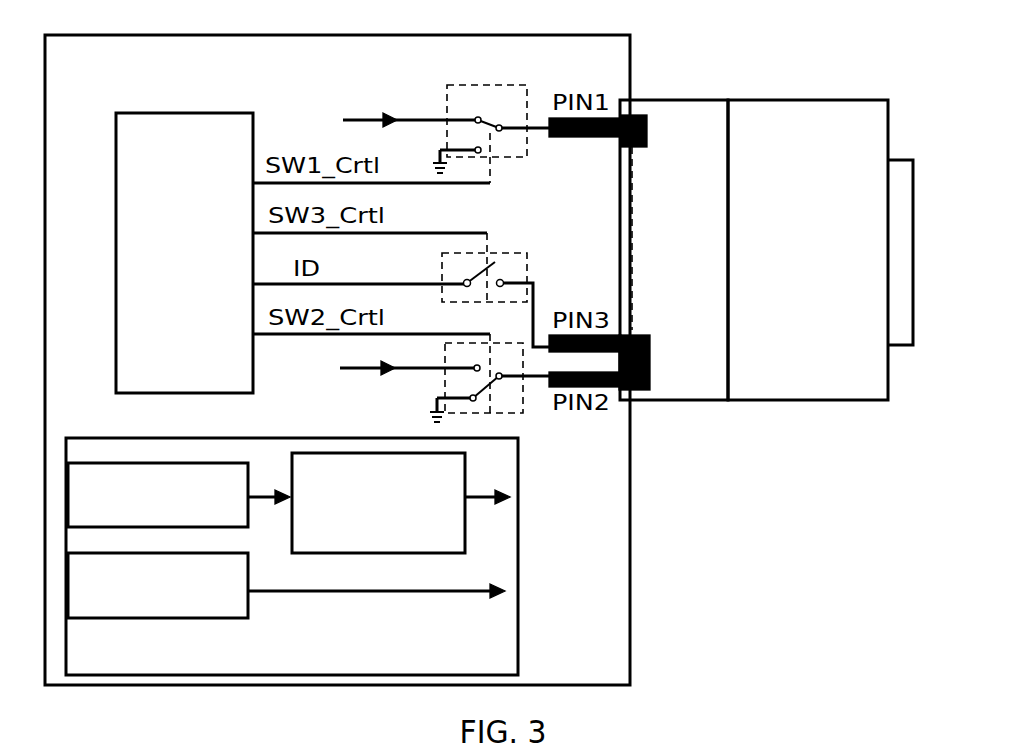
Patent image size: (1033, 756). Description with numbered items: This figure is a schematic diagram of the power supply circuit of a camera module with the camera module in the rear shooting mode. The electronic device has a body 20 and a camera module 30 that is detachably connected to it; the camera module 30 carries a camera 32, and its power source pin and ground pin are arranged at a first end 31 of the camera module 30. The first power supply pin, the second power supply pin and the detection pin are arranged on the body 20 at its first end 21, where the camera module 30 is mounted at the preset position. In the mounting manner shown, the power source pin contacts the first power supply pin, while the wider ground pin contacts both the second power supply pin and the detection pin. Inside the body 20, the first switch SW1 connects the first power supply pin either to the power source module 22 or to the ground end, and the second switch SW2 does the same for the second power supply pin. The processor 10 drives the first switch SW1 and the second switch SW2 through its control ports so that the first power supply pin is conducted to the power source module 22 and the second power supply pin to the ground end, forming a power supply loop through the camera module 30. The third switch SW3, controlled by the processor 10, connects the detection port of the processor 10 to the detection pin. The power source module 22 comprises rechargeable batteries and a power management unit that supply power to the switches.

The body 20 is at (468, 35).
The processor 10 is at (215, 113).
The first end of the body 21 is at (633, 74).
The first end of the camera module 31 is at (680, 112).
The camera module 30 is at (790, 100).
The camera 32 is at (908, 257).
The power source module 22 is at (518, 552).
The first switch SW1 is at (515, 85).
The second switch SW2 is at (493, 413).
The third switch SW3 is at (507, 253).